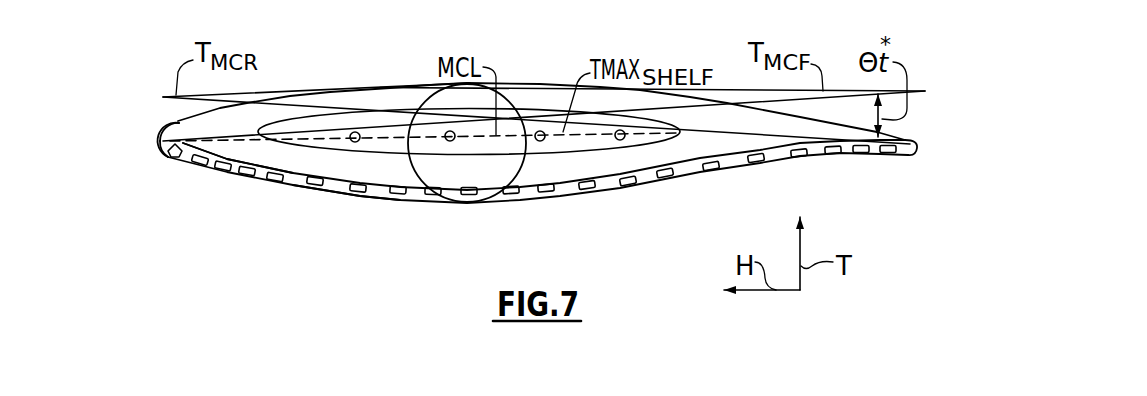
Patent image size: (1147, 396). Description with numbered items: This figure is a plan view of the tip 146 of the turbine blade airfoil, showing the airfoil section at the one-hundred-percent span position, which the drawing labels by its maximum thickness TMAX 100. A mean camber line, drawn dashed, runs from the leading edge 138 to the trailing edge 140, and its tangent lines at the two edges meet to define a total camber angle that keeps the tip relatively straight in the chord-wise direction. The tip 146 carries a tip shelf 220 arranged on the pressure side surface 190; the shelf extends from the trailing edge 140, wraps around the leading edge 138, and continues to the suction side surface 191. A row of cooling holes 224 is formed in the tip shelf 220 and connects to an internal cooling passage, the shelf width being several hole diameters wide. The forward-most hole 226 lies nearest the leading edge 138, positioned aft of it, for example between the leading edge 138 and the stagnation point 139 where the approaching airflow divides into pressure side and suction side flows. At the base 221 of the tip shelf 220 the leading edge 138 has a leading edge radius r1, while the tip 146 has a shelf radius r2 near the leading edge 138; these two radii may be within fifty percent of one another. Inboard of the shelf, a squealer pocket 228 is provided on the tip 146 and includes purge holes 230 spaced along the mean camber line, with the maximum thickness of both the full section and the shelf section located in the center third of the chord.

The airfoil section 100 is at (527, 144).
The leading edge 138 is at (128, 151).
The stagnation point 139 is at (208, 193).
The trailing edge 140 is at (941, 179).
The tip 146 is at (245, 90).
The pressure side surface 190 is at (538, 205).
The suction side surface 191 is at (541, 75).
The tip shelf 220 is at (291, 210).
The base 221 is at (513, 192).
The cooling holes 224 is at (555, 202).
The forward-most hole 226 is at (137, 178).
The squealer pocket 228 is at (469, 103).
The purge holes 230 is at (487, 124).
The leading edge radius r1 is at (123, 125).
The shelf radius r2 is at (137, 94).